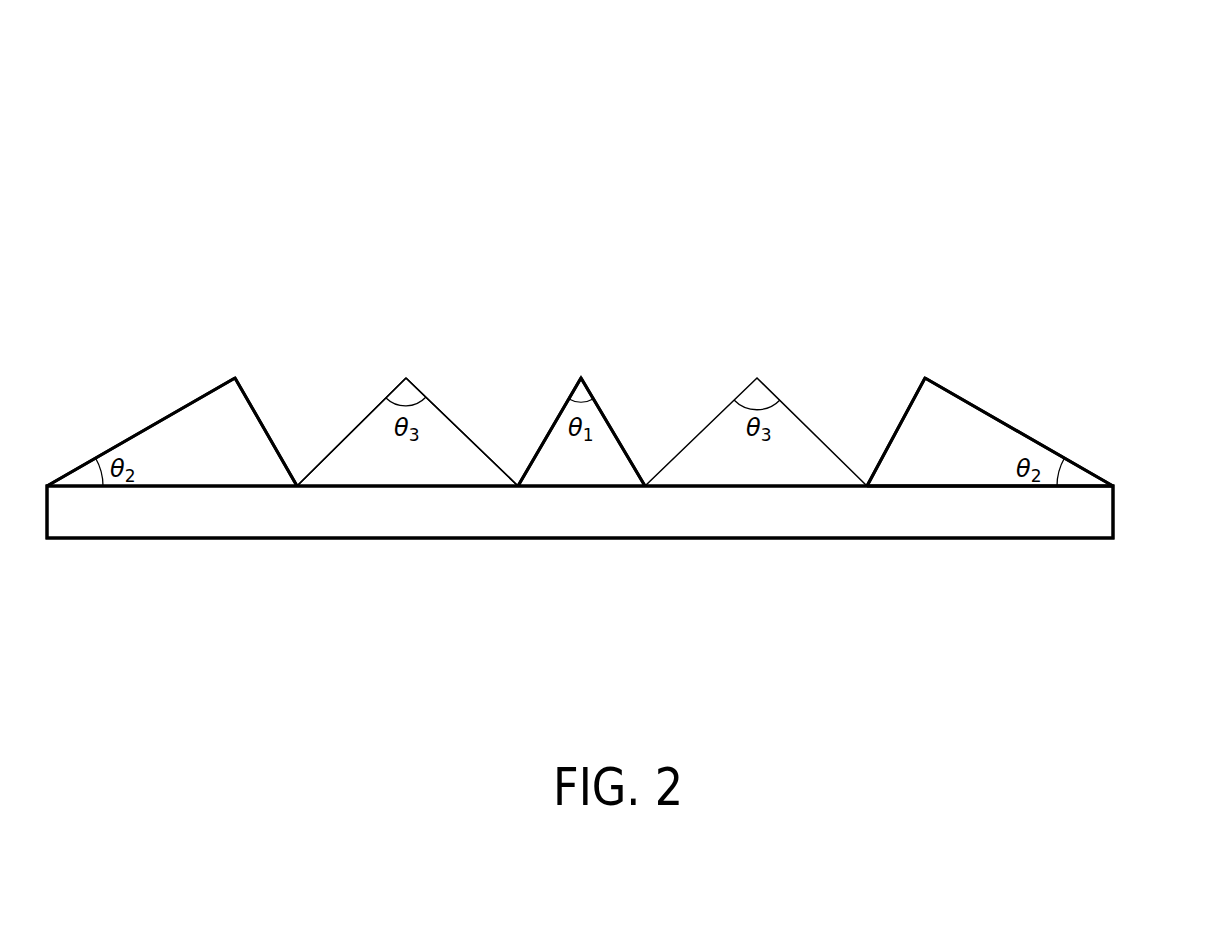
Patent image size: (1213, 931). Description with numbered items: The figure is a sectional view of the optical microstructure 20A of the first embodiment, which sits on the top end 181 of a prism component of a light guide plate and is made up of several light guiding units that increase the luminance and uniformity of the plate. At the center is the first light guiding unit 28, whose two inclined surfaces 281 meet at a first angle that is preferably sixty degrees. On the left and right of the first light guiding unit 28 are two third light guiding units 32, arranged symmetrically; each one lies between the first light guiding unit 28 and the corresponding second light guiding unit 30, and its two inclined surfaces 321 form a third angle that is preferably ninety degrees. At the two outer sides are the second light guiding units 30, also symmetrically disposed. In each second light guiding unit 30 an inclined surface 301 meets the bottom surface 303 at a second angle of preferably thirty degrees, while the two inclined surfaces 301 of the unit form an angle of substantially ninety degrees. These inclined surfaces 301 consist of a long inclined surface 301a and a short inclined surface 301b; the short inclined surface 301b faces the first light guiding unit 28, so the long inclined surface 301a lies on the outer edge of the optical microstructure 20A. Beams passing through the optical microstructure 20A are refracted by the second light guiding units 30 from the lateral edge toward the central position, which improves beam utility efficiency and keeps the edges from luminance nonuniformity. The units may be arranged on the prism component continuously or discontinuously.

The optical microstructure 20A is at (1028, 118).
The top end 181 is at (609, 528).
The second light guiding unit 30 is at (322, 277).
The inclined surface 301 is at (200, 397).
The long inclined surface 301a is at (960, 395).
The short inclined surface 301b is at (910, 403).
The bottom surface 303 is at (962, 486).
The third light guiding unit 32 is at (483, 288).
The inclined surface 321 is at (375, 407).
The first light guiding unit 28 is at (653, 288).
The inclined surface 281 is at (562, 407).